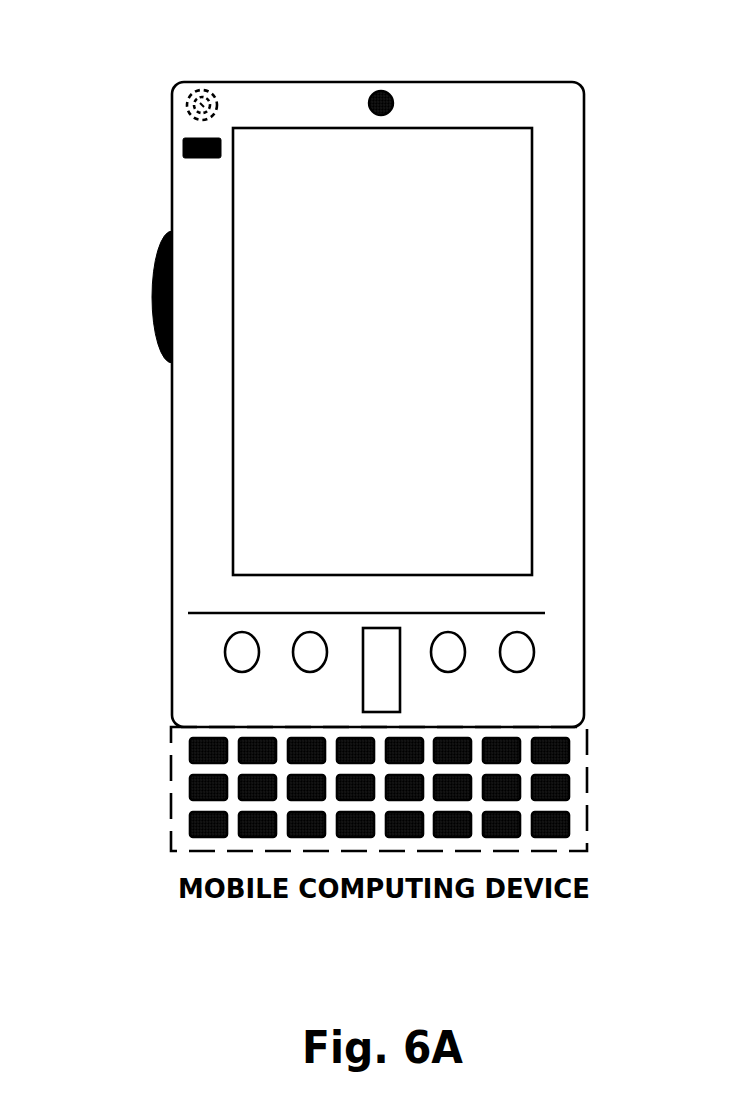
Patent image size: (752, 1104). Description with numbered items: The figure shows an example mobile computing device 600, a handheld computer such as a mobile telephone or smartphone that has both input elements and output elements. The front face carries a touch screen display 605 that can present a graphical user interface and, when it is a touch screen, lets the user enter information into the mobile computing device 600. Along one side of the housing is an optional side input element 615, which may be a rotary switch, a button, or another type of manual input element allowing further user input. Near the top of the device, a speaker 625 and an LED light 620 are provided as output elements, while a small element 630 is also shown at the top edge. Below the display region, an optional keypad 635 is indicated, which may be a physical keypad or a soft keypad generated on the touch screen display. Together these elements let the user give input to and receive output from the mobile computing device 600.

The mobile computing device 600 is at (583, 100).
The touch screen display 605 is at (257, 511).
The side input element 615 is at (150, 306).
The LED light 620 is at (185, 141).
The speaker 625 is at (185, 97).
The camera 630 is at (392, 95).
The keypad 635 is at (170, 818).